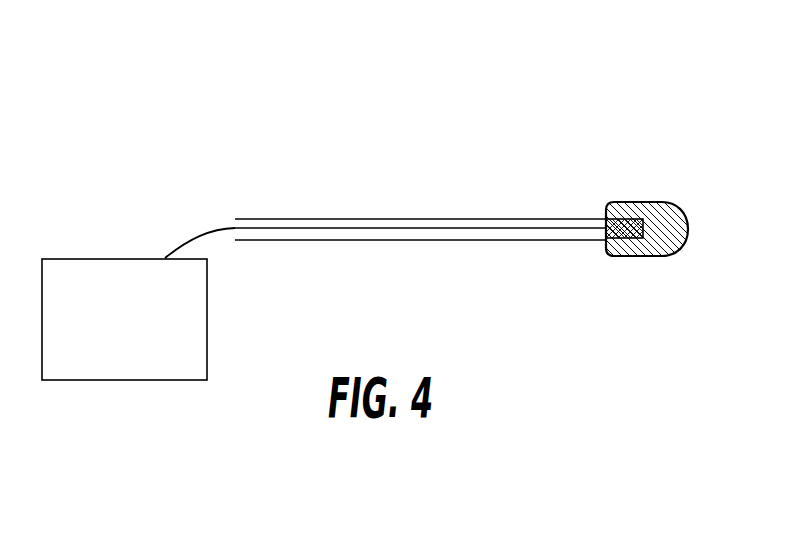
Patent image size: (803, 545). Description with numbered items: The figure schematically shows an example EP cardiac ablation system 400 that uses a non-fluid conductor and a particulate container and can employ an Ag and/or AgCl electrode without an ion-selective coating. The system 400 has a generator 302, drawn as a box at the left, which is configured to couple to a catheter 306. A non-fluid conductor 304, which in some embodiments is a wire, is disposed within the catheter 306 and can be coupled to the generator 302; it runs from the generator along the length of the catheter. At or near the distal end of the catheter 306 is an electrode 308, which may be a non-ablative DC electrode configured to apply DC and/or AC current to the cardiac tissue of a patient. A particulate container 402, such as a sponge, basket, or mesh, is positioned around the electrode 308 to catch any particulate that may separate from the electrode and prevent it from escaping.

The system 400 is at (521, 144).
The generator 302 is at (67, 273).
The non-fluid conductor 304 is at (210, 229).
The catheter 306 is at (440, 218).
The electrode 308 is at (647, 240).
The particulate container 402 is at (660, 252).